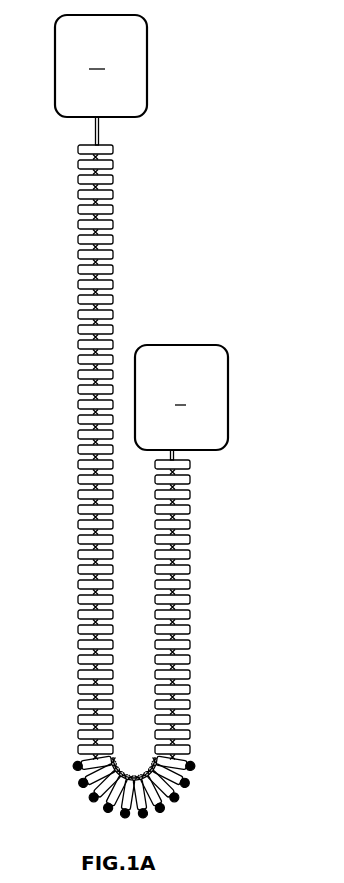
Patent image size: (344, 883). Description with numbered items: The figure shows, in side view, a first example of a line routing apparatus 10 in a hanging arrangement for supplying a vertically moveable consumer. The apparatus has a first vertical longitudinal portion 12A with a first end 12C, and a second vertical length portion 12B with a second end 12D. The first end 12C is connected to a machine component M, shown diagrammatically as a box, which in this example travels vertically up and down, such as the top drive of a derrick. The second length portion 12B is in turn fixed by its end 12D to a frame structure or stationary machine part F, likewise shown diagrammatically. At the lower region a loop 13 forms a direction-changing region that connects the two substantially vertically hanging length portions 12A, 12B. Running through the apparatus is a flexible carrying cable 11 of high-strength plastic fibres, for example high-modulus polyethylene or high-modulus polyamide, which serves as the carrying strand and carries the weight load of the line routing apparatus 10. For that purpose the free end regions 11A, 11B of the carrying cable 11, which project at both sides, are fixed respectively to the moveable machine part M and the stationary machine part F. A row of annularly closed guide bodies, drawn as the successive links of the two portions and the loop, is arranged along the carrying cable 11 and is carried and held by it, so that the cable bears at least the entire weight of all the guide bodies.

The line routing apparatus 10 is at (146, 257).
The carrying cable 11 is at (94, 131).
The free end region 11A is at (106, 116).
The free end region 11B is at (177, 449).
The first vertical longitudinal portion 12A is at (89, 452).
The second vertical length portion 12B is at (213, 610).
The first end 12C is at (122, 145).
The second end 12D is at (198, 460).
The loop 13 is at (213, 795).